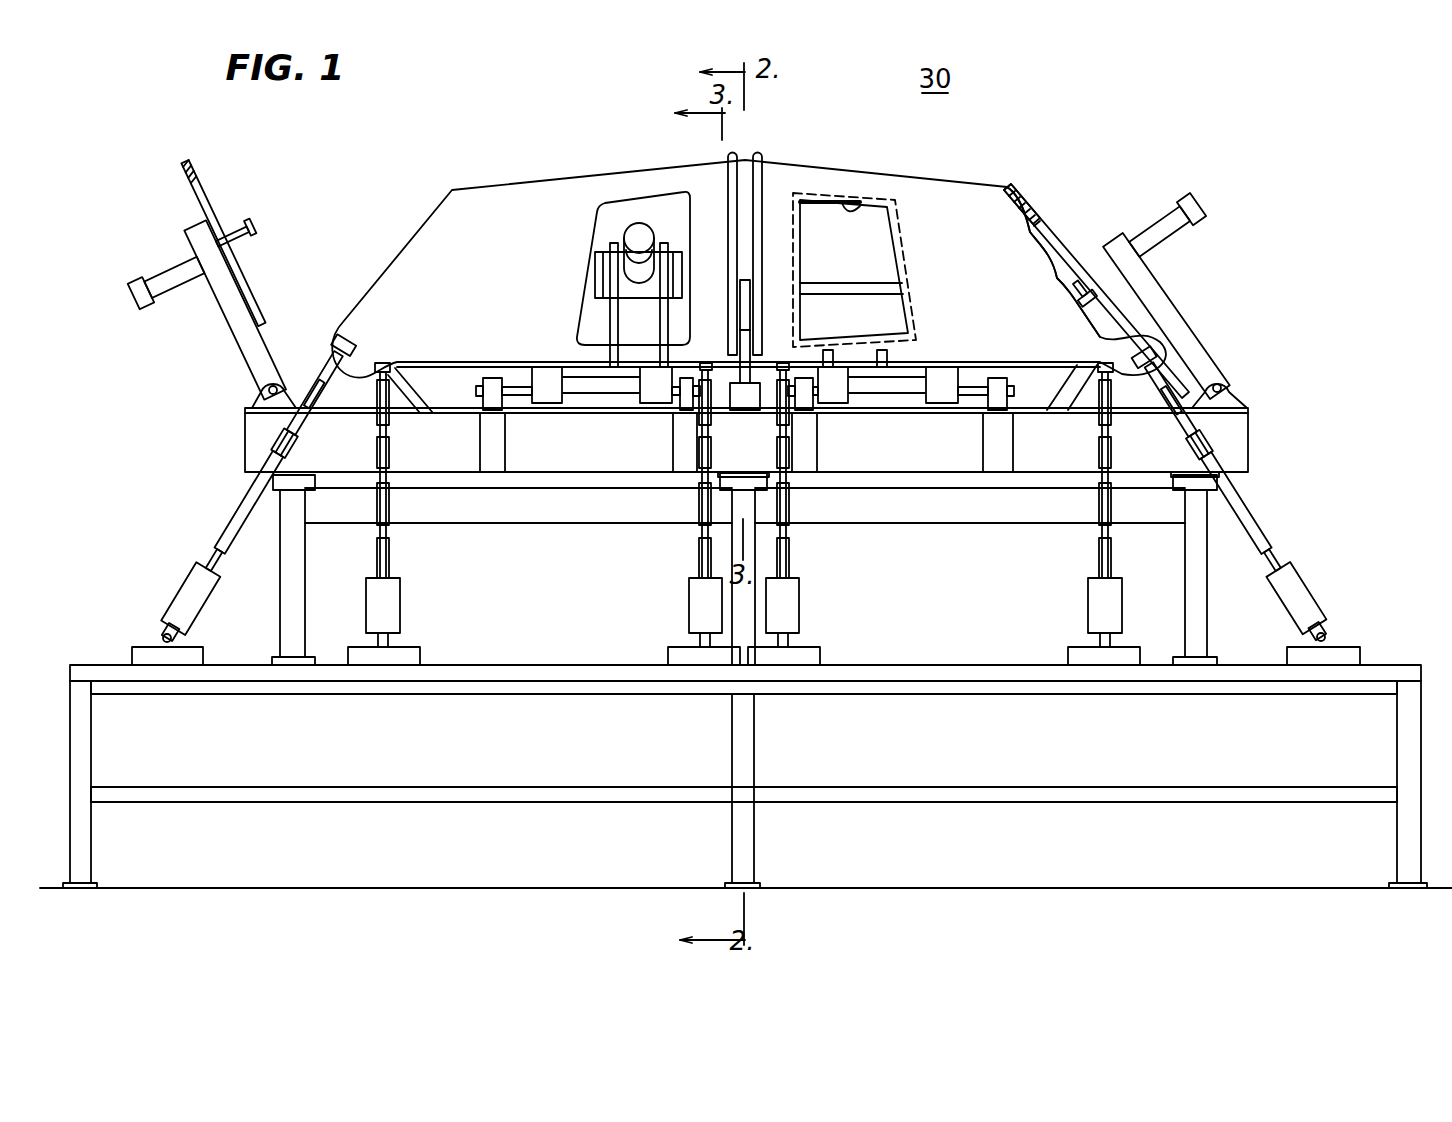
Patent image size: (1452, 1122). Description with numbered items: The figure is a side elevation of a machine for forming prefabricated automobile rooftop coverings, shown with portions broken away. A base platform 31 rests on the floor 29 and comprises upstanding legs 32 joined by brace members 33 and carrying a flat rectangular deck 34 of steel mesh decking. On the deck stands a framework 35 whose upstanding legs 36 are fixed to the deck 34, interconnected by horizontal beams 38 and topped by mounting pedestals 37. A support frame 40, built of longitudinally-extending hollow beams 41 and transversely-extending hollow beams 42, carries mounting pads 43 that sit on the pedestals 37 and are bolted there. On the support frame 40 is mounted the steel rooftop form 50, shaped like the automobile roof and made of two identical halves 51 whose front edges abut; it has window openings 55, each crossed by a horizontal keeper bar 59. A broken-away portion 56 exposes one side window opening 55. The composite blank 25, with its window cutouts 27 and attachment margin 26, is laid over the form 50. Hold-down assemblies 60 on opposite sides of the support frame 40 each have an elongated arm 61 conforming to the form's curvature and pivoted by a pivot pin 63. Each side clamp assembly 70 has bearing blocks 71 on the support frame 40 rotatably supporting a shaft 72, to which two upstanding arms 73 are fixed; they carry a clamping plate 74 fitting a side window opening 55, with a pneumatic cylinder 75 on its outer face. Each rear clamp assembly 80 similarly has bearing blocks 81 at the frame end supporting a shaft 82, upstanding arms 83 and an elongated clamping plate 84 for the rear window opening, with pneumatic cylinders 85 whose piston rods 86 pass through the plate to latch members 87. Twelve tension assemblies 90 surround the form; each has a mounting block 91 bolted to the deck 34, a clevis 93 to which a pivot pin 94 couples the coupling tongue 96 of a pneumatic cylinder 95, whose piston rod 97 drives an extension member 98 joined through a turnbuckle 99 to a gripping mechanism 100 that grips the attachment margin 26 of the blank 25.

The blank 25 is at (749, 252).
The attachment margin 26 is at (410, 370).
The window cutouts 27 is at (945, 270).
The floor 29 is at (1088, 886).
The base platform 31 is at (746, 753).
The legs 32 is at (92, 750).
The brace members 33 is at (892, 696).
The deck 34 is at (955, 664).
The framework 35 is at (715, 551).
The legs 36 is at (305, 572).
The mounting pedestal 37 is at (280, 490).
The beams 38 is at (515, 520).
The support frame 40 is at (762, 419).
The longitudinally-extending hollow beams 41 is at (252, 432).
The transversely-extending hollow beams 42 is at (479, 446).
The mounting pads 43 is at (752, 476).
The rooftop form 50 is at (1030, 206).
The halves 51 is at (752, 277).
The window openings 55 is at (868, 195).
The panel edge 56 is at (1030, 196).
The keeper bar 59 is at (848, 285).
The hold-down assembly 60 is at (771, 199).
The arm 61 is at (728, 196).
The pivot pin 63 is at (746, 407).
The side clamp assembly 70 is at (733, 307).
The bearing blocks 71 is at (492, 378).
The shaft 72 is at (577, 401).
The arms 73 is at (667, 326).
The clamping plate 74 is at (592, 209).
The pneumatic cylinder 75 is at (639, 228).
The rear clamp assembly 80 is at (705, 284).
The bearing blocks 81 is at (254, 397).
The shaft 82 is at (745, 369).
The upstanding arms 83 is at (228, 323).
The clamping plate 84 is at (190, 181).
The pneumatic cylinders 85 is at (150, 267).
The piston rods 86 is at (238, 228).
The latch members 87 is at (266, 216).
The tension assembly 90 is at (727, 484).
The mounting block 91 is at (133, 651).
The clevis 93 is at (163, 638).
The pivot pin 94 is at (1345, 651).
The pneumatic cylinder 95 is at (1308, 597).
The coupling tongue 96 is at (1330, 633).
The piston rod 97 is at (1283, 567).
The extension member 98 is at (240, 508).
The turnbuckle 99 is at (300, 433).
The gripping mechanism 100 is at (329, 350).